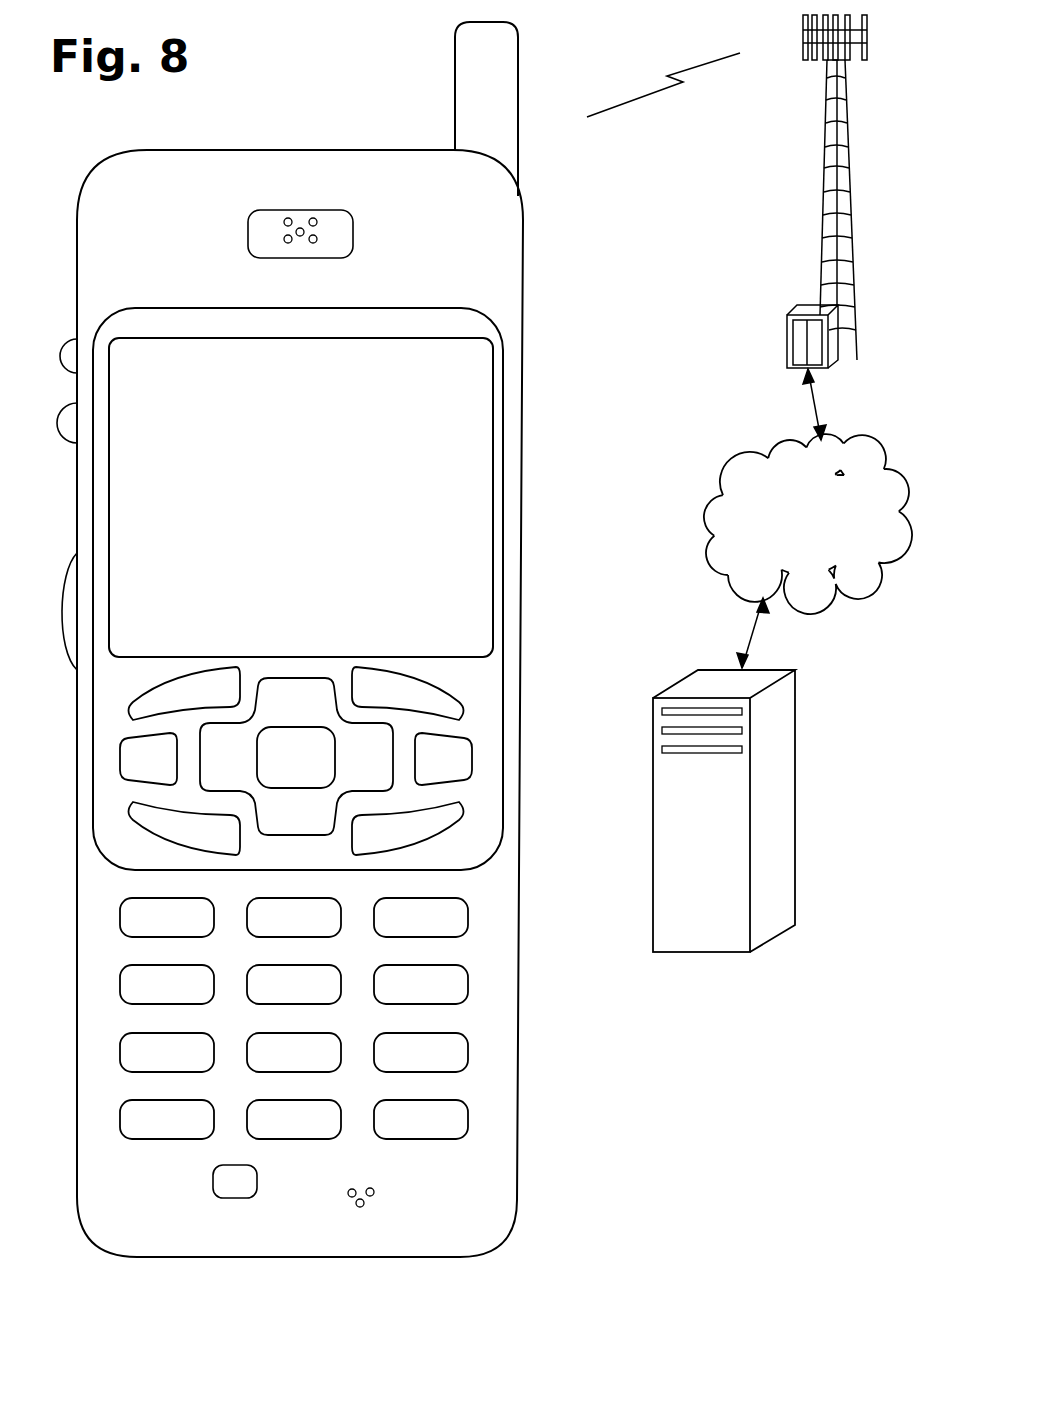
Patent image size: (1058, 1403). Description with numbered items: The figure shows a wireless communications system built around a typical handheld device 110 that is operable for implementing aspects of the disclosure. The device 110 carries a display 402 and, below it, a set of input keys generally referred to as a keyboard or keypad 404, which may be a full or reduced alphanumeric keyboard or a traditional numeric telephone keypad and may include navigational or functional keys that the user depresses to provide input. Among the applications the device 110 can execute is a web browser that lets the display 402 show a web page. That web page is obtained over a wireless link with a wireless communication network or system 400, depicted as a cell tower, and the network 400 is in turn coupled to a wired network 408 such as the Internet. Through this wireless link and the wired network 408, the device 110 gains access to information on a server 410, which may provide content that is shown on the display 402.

The device 110 is at (122, 1252).
The wireless communication network or system 400 is at (820, 207).
The display 402 is at (495, 352).
The input keys 404 is at (534, 668).
The wired network 408 is at (730, 577).
The server 410 is at (698, 952).